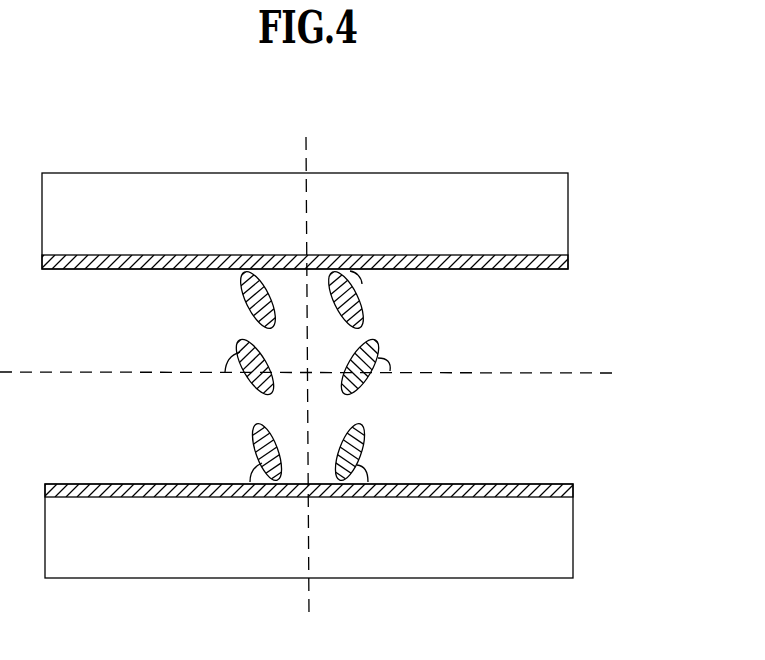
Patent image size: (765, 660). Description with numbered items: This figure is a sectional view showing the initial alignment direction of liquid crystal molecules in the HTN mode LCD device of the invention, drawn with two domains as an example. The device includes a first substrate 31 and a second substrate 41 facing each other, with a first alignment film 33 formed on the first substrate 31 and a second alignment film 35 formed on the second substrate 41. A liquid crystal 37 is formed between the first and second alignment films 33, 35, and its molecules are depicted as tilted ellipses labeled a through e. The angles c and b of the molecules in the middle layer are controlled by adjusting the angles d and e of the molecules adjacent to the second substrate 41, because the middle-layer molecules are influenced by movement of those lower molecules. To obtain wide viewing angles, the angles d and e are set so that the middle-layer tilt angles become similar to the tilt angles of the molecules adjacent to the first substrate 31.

The first substrate 31 is at (560, 219).
The first alignment film 33 is at (568, 263).
The second alignment film 35 is at (573, 488).
The liquid crystal 37 is at (363, 310).
The second substrate 41 is at (563, 538).